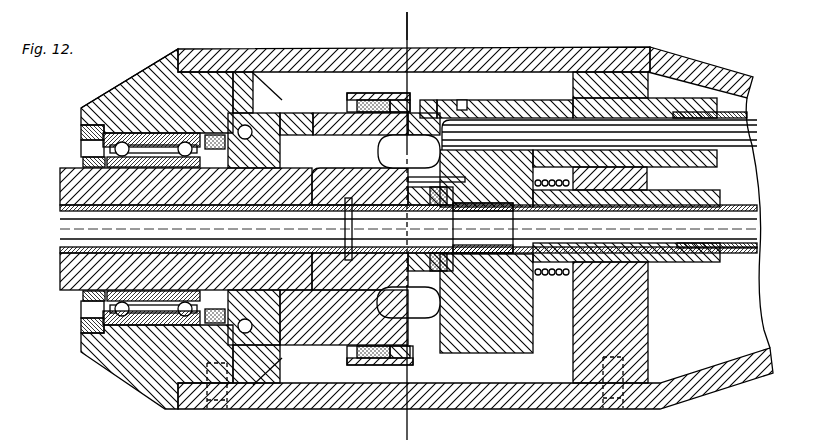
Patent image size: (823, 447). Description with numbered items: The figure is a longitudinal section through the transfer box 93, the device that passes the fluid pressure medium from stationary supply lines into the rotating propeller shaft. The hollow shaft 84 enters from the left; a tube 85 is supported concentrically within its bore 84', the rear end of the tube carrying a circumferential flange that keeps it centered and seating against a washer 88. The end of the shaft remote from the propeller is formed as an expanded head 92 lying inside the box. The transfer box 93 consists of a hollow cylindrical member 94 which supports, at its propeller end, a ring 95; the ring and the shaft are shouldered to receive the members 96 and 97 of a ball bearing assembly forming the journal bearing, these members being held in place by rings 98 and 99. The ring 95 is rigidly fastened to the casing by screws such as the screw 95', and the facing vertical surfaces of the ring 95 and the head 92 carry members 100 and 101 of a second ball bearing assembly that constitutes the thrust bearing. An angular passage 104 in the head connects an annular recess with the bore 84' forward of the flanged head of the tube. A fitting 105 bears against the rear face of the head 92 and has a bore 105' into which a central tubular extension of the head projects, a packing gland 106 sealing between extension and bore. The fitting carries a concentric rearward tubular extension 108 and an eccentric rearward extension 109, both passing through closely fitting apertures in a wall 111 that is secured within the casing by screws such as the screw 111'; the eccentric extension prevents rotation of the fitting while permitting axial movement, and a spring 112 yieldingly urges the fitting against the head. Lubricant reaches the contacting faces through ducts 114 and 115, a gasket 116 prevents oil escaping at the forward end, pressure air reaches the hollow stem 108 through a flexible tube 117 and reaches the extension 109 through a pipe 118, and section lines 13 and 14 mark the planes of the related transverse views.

The section line 13 is at (395, 15).
The section line 14 is at (423, 32).
The hollow shaft 84 is at (176, 217).
The bore of shaft 84' is at (390, 205).
The tube 85 is at (62, 247).
The washer 88 is at (337, 320).
The expanded head 92 is at (284, 385).
The transfer box 93 is at (493, 47).
The hollow cylindrical member 94 is at (545, 47).
The ring 95 is at (157, 76).
The screw 95' is at (212, 401).
The ball bearing member 96 is at (107, 110).
The ball bearing member 97 is at (85, 143).
The ring 98 is at (83, 296).
The ring 99 is at (83, 326).
The thrust bearing member 100 is at (238, 70).
The thrust bearing member 101 is at (284, 70).
The angular passage 104 is at (312, 168).
The fitting 105 is at (439, 268).
The bore of fitting 105' is at (502, 324).
The packing gland 106 is at (360, 366).
The rearward tubular extension 108 is at (679, 262).
The eccentric rearward extension 109 is at (675, 100).
The wall 111 is at (636, 322).
The screw 111' is at (612, 398).
The spring 112 is at (546, 276).
The duct 114 is at (422, 100).
The duct 115 is at (465, 100).
The gasket 116 is at (210, 313).
The flexible tube 117 is at (741, 248).
The pipe 118 is at (748, 147).